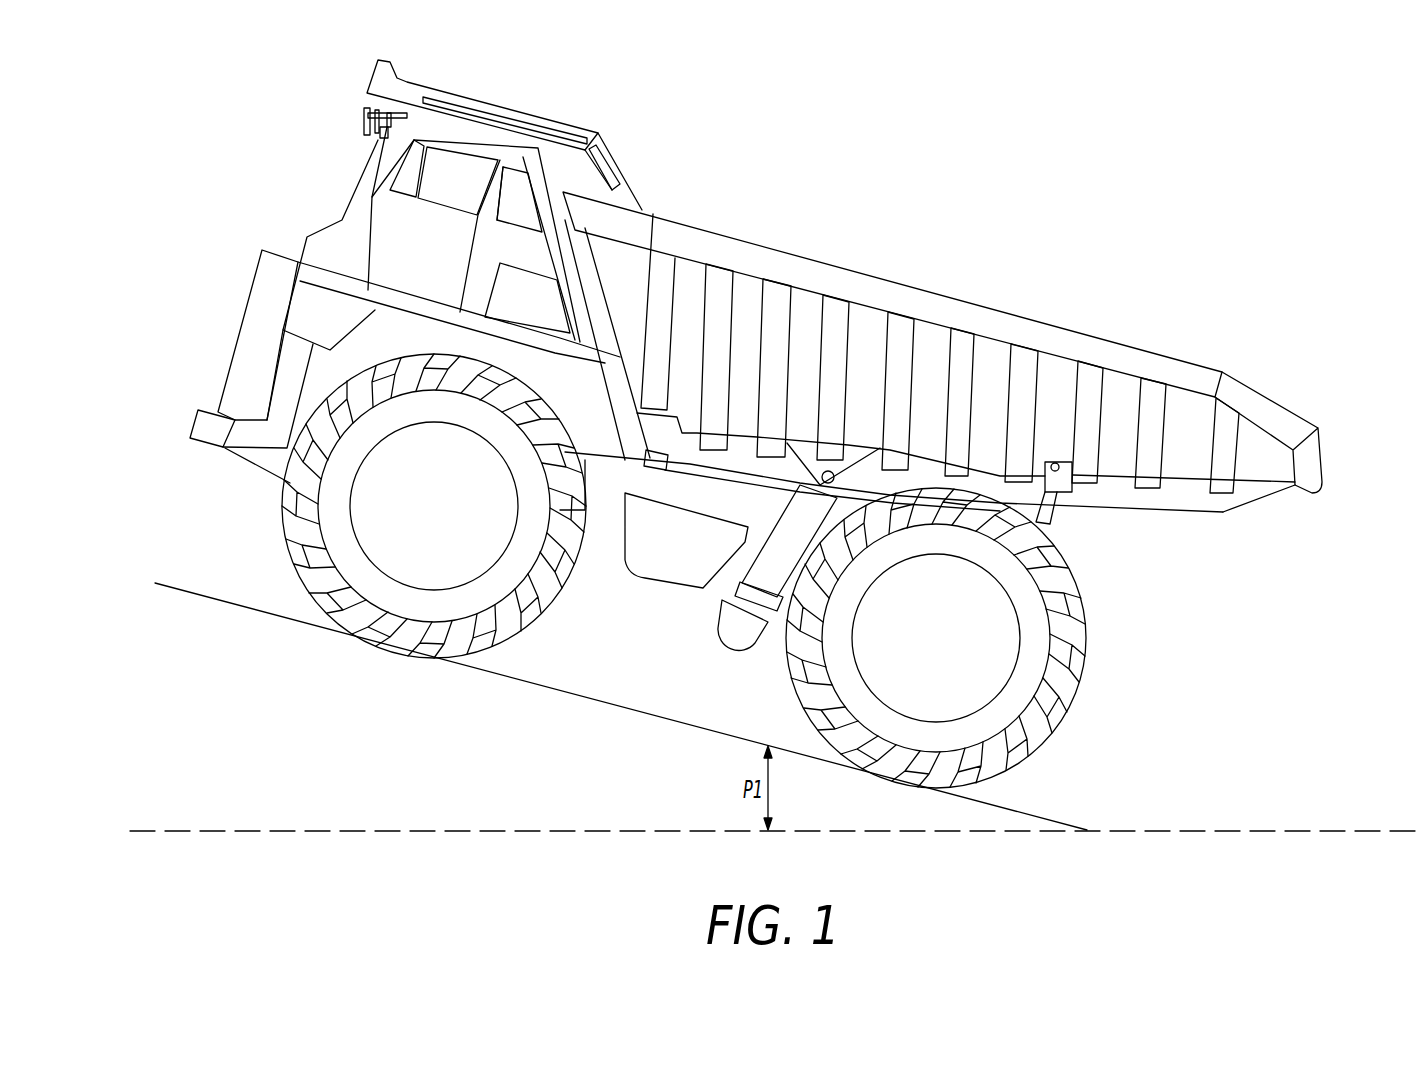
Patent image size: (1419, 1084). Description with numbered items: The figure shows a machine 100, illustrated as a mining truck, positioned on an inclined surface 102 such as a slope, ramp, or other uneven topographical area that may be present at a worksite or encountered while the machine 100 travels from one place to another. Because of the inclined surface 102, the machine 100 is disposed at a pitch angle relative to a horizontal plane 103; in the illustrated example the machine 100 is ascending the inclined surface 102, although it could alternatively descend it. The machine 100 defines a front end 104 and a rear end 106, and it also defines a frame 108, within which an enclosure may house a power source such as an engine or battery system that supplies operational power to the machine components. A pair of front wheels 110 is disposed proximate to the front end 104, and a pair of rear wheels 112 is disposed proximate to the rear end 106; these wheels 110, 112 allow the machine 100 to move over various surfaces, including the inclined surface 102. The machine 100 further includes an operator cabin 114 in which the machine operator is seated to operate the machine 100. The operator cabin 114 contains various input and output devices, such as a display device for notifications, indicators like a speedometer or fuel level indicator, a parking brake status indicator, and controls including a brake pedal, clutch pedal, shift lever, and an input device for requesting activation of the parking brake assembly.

The machine 100 is at (855, 95).
The inclined surface 102 is at (1028, 815).
The horizontal plane 103 is at (1249, 830).
The front end 104 is at (176, 430).
The rear end 106 is at (1255, 365).
The frame 108 is at (613, 507).
The front wheels 110 is at (302, 530).
The rear wheels 112 is at (1082, 628).
The operator cabin 114 is at (378, 167).